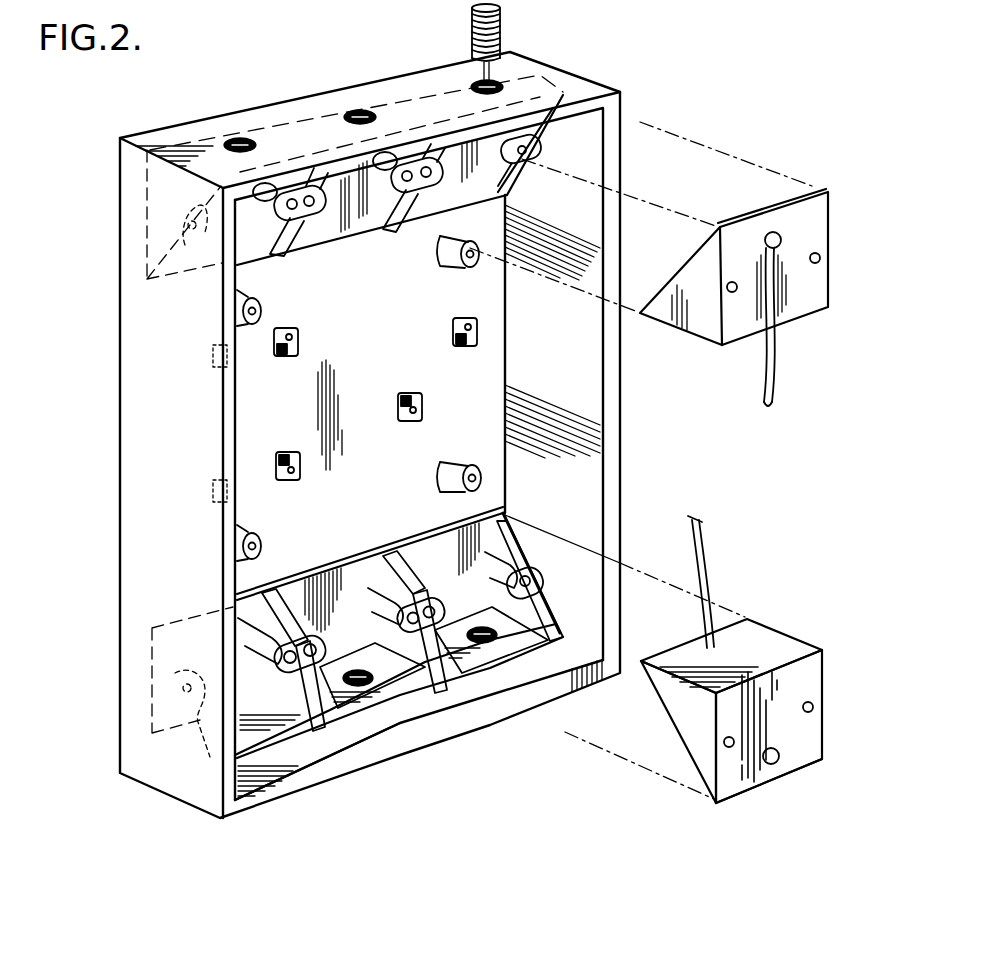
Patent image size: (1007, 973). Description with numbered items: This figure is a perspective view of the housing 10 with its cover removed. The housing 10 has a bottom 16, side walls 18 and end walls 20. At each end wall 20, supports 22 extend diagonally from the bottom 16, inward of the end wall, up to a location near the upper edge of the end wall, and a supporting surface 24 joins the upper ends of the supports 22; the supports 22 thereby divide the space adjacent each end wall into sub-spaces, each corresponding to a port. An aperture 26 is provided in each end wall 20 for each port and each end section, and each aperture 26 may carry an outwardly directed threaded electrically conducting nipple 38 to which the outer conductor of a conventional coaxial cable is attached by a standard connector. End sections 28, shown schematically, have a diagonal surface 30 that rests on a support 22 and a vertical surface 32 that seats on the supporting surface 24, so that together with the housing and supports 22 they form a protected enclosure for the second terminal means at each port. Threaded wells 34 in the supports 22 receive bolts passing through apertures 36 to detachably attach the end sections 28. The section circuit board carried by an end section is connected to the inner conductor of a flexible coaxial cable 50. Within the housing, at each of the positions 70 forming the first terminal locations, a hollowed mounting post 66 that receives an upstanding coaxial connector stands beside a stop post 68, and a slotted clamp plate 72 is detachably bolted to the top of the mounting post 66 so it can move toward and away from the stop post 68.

The housing 10 is at (110, 558).
The bottom 16 is at (372, 517).
The side walls 18 is at (179, 475).
The end walls 20 is at (213, 122).
The supports 22 is at (233, 712).
The supporting surface 24 is at (397, 703).
The aperture 26 is at (357, 112).
The end sections 28 is at (813, 230).
The diagonal surface 30 is at (677, 733).
The vertical surface 32 is at (710, 795).
The threaded wells 34 is at (432, 602).
The apertures 36 is at (815, 707).
The threaded electrically conducting nipple 38 is at (502, 24).
The flexible coaxial cable 50 is at (773, 385).
The mounting post 66 is at (276, 328).
The stop post 68 is at (407, 392).
The positions 70 is at (453, 308).
The clamp plate 72 is at (478, 330).